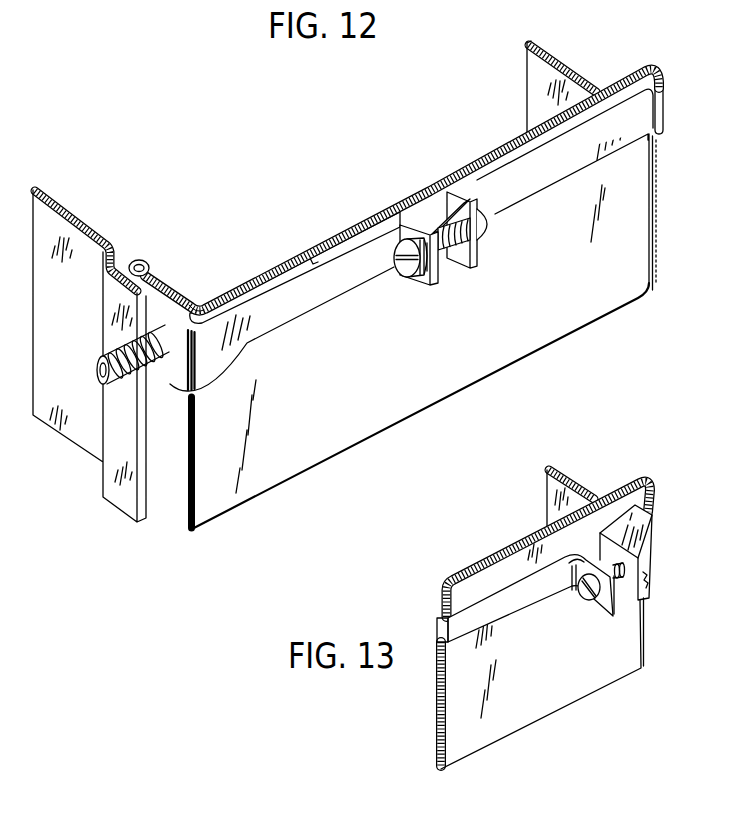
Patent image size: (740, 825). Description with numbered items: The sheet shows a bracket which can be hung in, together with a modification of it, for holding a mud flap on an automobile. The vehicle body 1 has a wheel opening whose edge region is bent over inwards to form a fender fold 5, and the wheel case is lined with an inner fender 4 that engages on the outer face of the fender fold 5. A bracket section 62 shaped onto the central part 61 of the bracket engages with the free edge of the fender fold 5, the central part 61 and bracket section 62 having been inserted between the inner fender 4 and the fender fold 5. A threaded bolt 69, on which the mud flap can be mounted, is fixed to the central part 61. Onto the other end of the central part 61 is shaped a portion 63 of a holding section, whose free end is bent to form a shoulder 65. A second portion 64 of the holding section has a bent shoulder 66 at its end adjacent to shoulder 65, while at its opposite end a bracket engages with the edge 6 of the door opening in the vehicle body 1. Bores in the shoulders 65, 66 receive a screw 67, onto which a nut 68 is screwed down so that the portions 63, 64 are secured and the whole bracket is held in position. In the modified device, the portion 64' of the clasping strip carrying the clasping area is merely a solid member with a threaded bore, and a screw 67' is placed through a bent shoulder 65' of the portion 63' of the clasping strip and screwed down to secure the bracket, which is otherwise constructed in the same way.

In FIG. 12, the vehicle body 1 is at (364, 420).
In FIG. 13, the vehicle body 1 is at (540, 703).
In FIG. 12, the inner fender 4 is at (78, 236).
In FIG. 12, the fender fold 5 is at (164, 284).
In FIG. 12, the edge of the door opening 6 is at (652, 72).
In FIG. 13, the edge of the door opening 6 is at (641, 484).
In FIG. 12, the central part 61 is at (189, 297).
In FIG. 12, the bracket section 62 is at (138, 260).
In FIG. 12, the portion of the holding section 63 is at (295, 265).
In FIG. 12, the second portion of the holding section 64 is at (570, 126).
In FIG. 12, the shoulder 65 is at (416, 276).
In FIG. 12, the bent shoulder 66 is at (468, 270).
In FIG. 12, the screw 67 is at (437, 205).
In FIG. 12, the nut 68 is at (490, 236).
In FIG. 12, the threaded bolt 69 is at (97, 373).
In FIG. 13, the portion of the clasping strip 63' is at (525, 586).
In FIG. 13, the portion of the clasping strip 64' is at (630, 615).
In FIG. 13, the bent shoulder 65' is at (593, 612).
In FIG. 13, the screw 67' is at (591, 604).